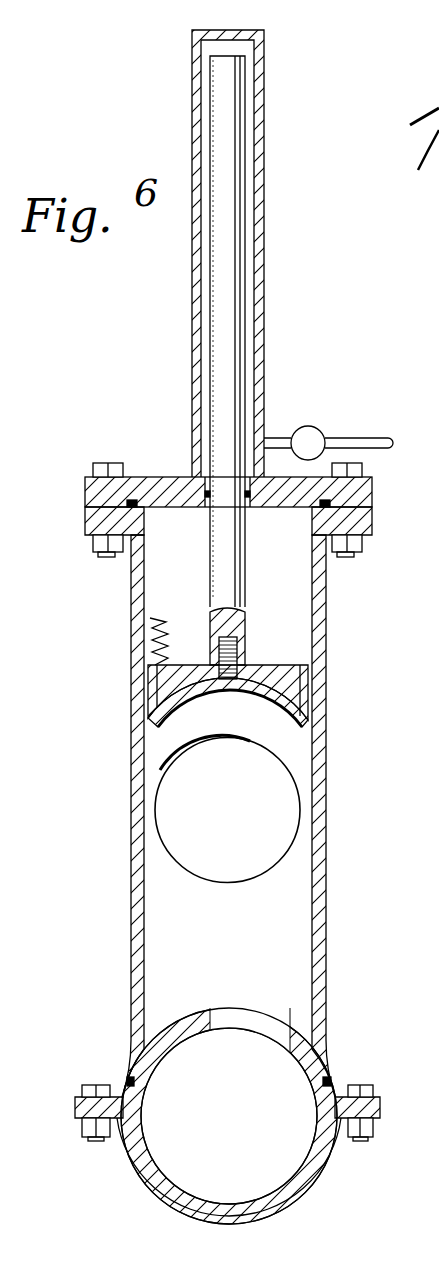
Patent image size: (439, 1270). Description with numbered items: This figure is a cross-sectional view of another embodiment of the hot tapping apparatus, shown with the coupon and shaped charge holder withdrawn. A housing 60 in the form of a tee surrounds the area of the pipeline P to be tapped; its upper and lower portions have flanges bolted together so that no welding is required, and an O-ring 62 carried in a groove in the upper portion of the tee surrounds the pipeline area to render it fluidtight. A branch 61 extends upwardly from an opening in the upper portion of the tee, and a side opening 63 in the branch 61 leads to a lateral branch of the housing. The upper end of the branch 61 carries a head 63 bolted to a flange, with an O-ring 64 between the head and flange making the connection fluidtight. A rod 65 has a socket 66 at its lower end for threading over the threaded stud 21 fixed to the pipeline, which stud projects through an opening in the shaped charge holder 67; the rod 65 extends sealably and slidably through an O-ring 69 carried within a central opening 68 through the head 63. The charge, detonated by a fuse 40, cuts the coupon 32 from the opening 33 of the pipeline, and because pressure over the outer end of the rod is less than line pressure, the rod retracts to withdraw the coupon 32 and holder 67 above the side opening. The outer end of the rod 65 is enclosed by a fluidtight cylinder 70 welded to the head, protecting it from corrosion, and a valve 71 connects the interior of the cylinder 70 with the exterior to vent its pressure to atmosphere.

The fluidtight cylinder 70 is at (265, 282).
The rod 65 is at (234, 332).
The valve 71 is at (309, 426).
The head 63 is at (165, 477).
The O-ring 64 is at (124, 495).
The central opening 68 is at (197, 495).
The O-ring 69 is at (248, 495).
The fuse 40 is at (145, 637).
The threaded stud 21 is at (228, 630).
The socket 66 is at (240, 648).
The shaped charge holder 67 is at (308, 668).
The coupon 32 is at (200, 694).
The branch 61 is at (131, 758).
The housing 60 is at (330, 758).
The opening 33 is at (290, 1047).
The O-ring 62 is at (337, 1075).
The pipeline P is at (239, 1113).